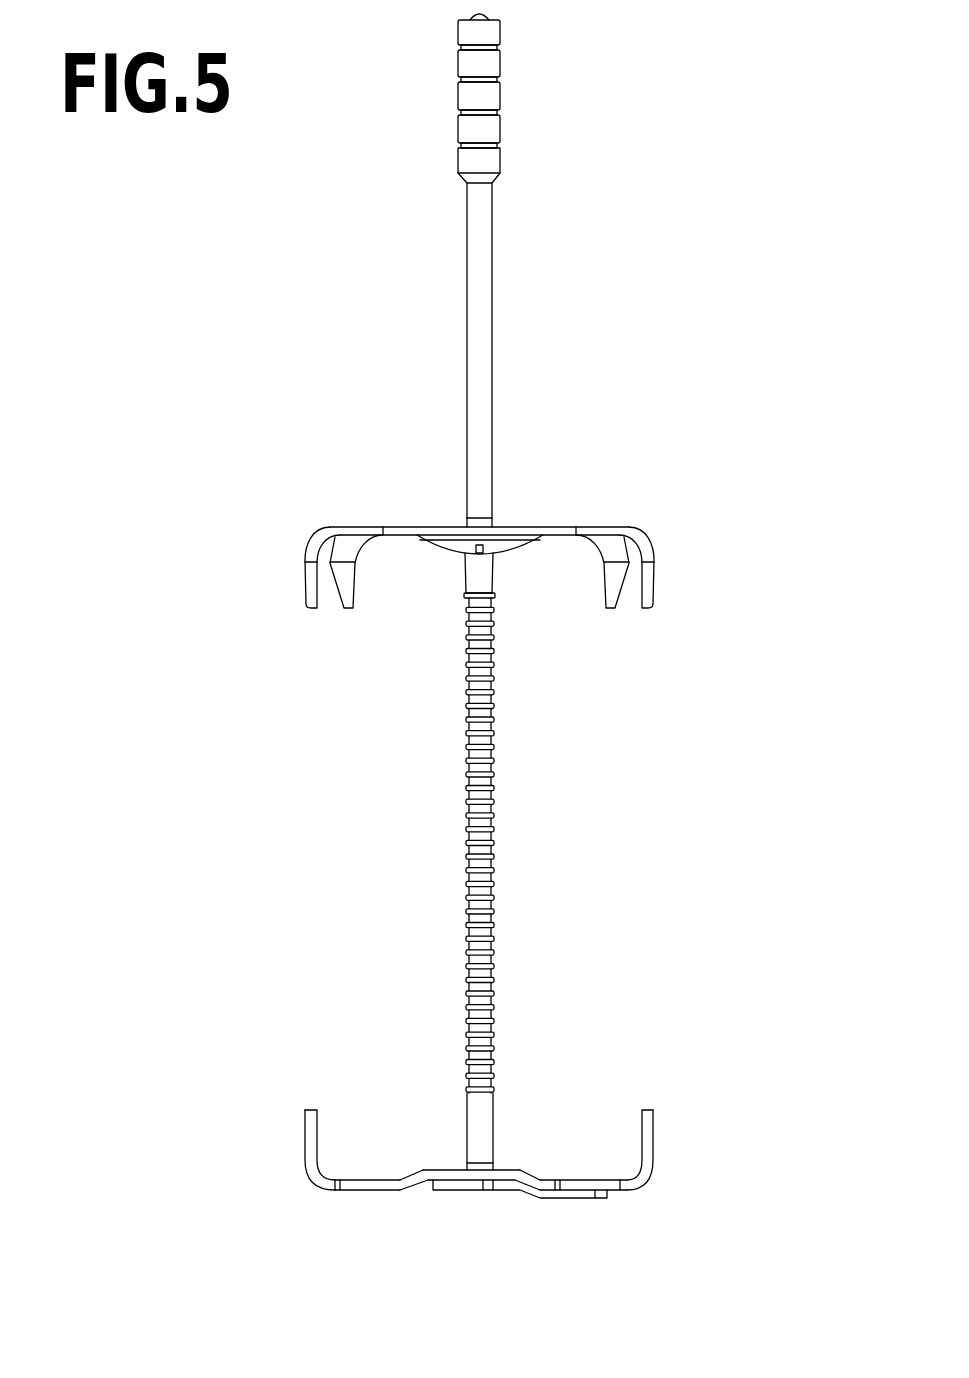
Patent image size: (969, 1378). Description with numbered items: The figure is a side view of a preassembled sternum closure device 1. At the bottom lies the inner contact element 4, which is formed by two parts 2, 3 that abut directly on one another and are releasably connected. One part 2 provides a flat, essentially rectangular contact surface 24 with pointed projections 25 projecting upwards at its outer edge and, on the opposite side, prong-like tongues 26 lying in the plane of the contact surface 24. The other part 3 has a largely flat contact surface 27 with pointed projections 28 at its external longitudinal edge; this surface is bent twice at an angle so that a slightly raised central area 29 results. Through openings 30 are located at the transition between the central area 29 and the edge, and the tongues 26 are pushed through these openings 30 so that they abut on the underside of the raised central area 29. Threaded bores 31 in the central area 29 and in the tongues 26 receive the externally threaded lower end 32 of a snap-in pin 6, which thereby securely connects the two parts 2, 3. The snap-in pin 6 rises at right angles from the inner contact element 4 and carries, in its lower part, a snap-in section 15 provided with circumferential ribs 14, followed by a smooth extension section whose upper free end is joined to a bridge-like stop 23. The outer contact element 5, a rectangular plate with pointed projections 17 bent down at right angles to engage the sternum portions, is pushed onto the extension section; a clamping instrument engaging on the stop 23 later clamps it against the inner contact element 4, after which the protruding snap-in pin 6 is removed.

The sternum closure device 1 is at (580, 292).
The part of the inner contact element 2 is at (633, 1208).
The part of the inner contact element 3 is at (348, 1207).
The inner contact element 4 is at (530, 1236).
The outer contact element 5 is at (585, 510).
The snap-in pin 6 is at (450, 380).
The circumferential ribs 14 is at (467, 718).
The snap-in section 15 is at (490, 822).
The pointed projections 17 is at (308, 585).
The bridge-like stop 23 is at (493, 100).
The contact surface 24 is at (580, 1180).
The pointed projections 25 is at (652, 1113).
The prong-like tongues 26 is at (450, 1192).
The contact surface 27 is at (367, 1149).
The pointed projections 28 is at (306, 1113).
The raised central area 29 is at (455, 1172).
The through openings 30 is at (536, 1172).
The threaded bores 31 is at (482, 1186).
The lower end of the snap-in pin 32 is at (482, 1130).